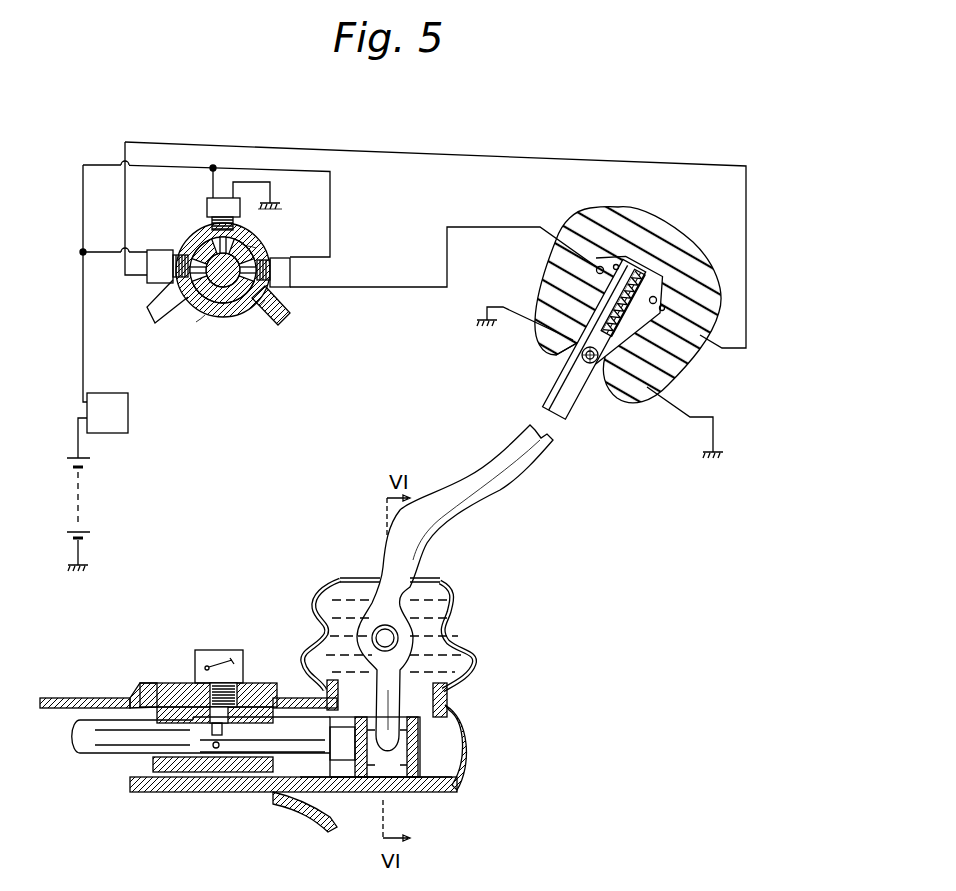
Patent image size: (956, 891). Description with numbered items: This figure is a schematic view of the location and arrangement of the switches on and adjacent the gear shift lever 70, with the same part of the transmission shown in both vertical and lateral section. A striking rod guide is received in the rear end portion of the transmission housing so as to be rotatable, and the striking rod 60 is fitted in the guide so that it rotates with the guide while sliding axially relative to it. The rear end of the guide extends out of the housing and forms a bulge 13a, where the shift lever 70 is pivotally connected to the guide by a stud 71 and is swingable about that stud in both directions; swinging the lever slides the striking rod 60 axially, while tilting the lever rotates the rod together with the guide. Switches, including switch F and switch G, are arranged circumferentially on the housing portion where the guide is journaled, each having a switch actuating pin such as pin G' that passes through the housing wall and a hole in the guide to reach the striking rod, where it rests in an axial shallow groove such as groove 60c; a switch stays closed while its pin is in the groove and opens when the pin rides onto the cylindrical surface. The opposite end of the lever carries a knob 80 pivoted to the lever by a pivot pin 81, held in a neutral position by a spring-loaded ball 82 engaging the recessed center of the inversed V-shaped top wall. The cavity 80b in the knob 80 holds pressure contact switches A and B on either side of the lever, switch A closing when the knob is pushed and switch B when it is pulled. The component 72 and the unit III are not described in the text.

The bulge 13a is at (470, 733).
The striking rod 60 is at (95, 755).
The axial shallow groove 60c is at (260, 306).
The gear shift lever 70 is at (490, 506).
The stud 71 is at (412, 640).
The lever coupling block 72 is at (418, 748).
The knob 80 is at (696, 241).
The cavity 80b is at (583, 307).
The pivot pin 81 is at (583, 395).
The spring-loaded ball 82 is at (642, 270).
The switch A is at (656, 312).
The switch B is at (596, 276).
The switch F is at (167, 251).
The switch G is at (291, 288).
The switch actuating pin G' is at (285, 325).
The control unit III is at (103, 393).